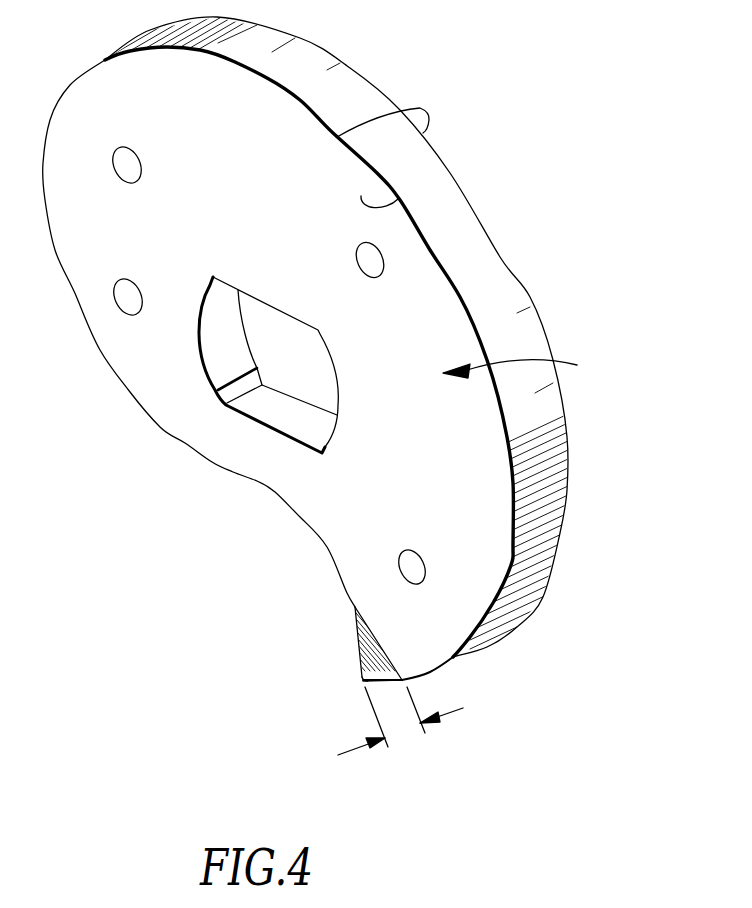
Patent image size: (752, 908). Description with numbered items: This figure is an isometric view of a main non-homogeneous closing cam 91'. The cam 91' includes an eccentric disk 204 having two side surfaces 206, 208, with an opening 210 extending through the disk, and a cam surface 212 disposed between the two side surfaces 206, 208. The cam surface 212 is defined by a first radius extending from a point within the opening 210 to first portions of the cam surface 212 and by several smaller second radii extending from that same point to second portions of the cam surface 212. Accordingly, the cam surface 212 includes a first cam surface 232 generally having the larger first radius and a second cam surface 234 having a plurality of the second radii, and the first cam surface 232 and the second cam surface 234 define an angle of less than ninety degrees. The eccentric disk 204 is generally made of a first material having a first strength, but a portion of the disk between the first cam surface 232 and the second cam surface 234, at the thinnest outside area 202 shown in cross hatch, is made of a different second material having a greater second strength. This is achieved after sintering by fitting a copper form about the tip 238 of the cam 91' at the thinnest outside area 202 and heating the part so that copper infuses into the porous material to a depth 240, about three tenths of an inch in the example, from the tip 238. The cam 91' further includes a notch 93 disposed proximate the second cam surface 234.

The main non-homogeneous closing cam 91' is at (242, 365).
The notch 93 is at (347, 589).
The thinnest outside area 202 is at (377, 655).
The eccentric disk 204 is at (527, 367).
The side surface 206 is at (398, 199).
The side surface 208 is at (340, 134).
The cam surface 212 is at (487, 272).
The opening 210 is at (270, 305).
The first cam surface 232 is at (387, 682).
The second cam surface 234 is at (360, 637).
The tip 238 is at (361, 680).
The depth 240 is at (402, 732).